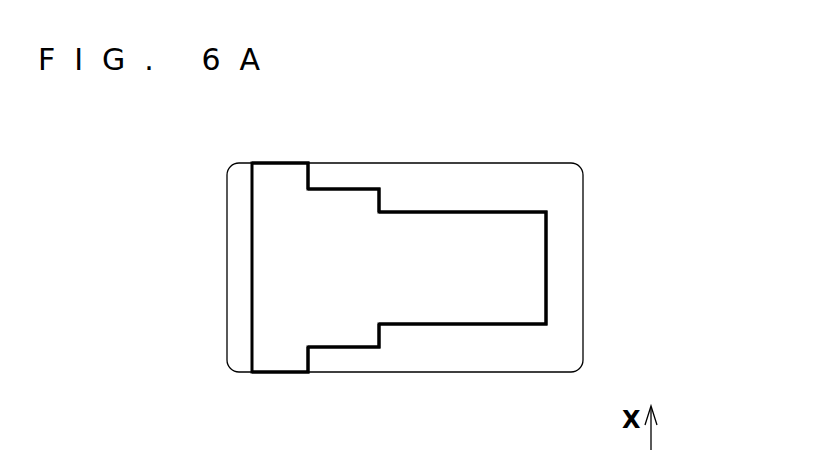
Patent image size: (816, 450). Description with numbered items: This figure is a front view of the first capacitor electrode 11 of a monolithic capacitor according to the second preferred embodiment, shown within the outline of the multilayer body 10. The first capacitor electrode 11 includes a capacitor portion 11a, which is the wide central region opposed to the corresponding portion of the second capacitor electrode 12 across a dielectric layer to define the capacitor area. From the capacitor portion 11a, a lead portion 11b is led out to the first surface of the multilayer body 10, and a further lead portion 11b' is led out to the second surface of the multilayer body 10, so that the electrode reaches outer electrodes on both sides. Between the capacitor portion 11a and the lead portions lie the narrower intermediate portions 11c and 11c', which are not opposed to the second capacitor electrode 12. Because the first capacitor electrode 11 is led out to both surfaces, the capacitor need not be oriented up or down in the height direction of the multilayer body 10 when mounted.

The multilayer body 10 is at (227, 282).
The first capacitor electrode 11 is at (471, 211).
The capacitor portion 11a is at (459, 295).
The lead portion 11b is at (275, 398).
The lead portion 11b' is at (275, 146).
The intermediate portion 11c is at (350, 380).
The intermediate portion 11c' is at (344, 158).
The second capacitor electrode 12 is at (327, 447).